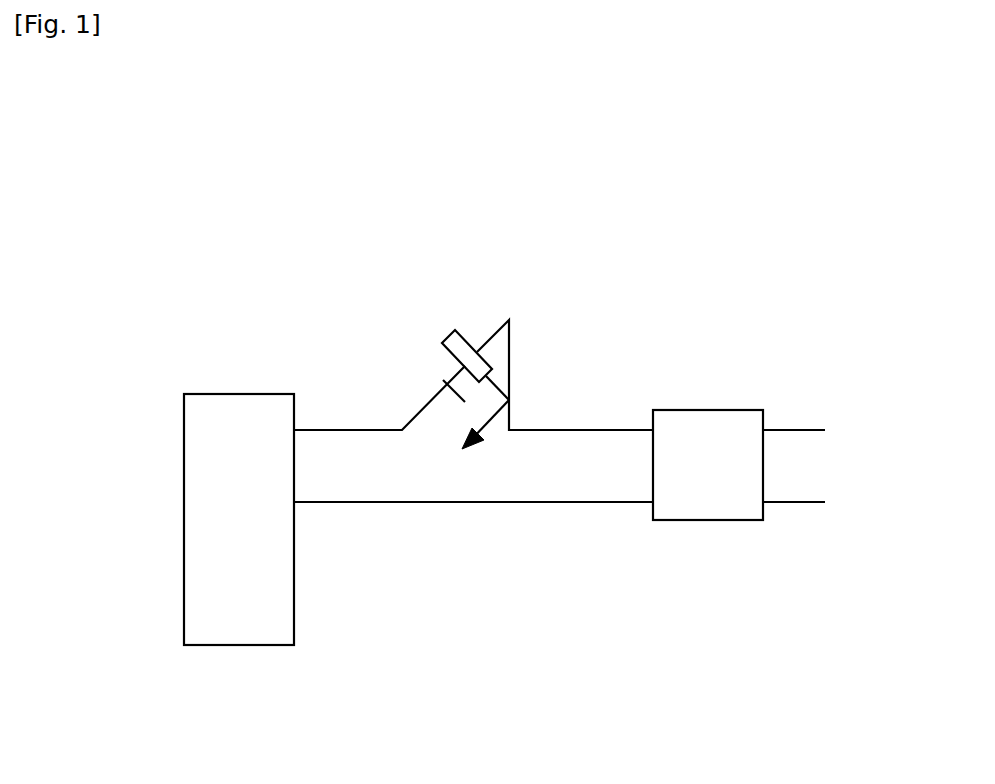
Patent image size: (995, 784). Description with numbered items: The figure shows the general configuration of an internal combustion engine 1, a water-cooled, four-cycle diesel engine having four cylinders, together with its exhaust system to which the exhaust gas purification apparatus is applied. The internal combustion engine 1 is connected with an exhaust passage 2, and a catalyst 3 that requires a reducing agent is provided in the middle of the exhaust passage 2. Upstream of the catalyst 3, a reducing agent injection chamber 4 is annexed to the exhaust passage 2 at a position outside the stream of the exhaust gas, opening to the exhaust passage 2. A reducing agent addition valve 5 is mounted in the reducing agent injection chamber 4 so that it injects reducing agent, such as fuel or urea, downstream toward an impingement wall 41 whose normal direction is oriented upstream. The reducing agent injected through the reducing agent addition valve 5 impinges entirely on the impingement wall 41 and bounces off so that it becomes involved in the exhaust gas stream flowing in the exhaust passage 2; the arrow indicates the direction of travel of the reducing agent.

The internal combustion engine 1 is at (294, 610).
The exhaust passage 2 is at (510, 502).
The catalyst 3 is at (708, 520).
The reducing agent injection chamber 4 is at (443, 382).
The impingement wall 41 is at (509, 383).
The reducing agent addition valve 5 is at (458, 332).